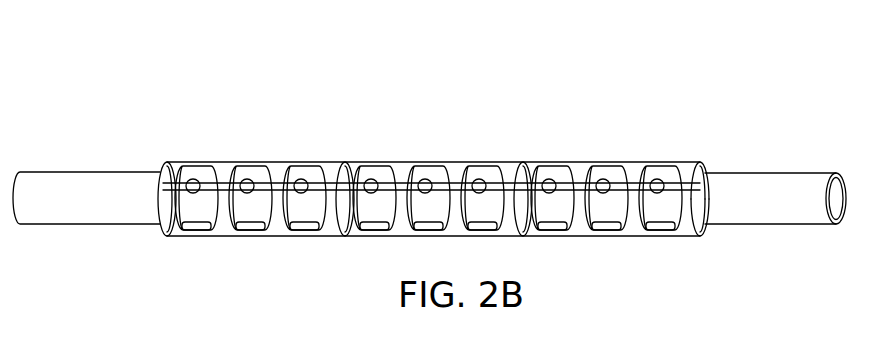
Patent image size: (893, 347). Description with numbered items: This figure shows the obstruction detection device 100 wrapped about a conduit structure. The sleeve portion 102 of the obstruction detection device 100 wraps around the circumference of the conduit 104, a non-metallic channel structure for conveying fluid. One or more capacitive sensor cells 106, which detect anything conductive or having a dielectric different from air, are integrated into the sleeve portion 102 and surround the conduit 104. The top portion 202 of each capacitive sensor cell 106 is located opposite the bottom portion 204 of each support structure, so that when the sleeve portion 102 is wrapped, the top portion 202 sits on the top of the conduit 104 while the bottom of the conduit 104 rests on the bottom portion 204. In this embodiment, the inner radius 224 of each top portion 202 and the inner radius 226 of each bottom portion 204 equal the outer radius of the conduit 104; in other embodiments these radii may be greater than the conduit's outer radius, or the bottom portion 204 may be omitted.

The obstruction detection device 100 is at (111, 62).
The sleeve portion 102 is at (637, 162).
The conduit 104 is at (95, 172).
The capacitive sensor cell 106 is at (480, 178).
The top portion 202 is at (310, 173).
The bottom portion 204 is at (305, 229).
The inner radius 224 is at (705, 183).
The inner radius 226 is at (705, 213).